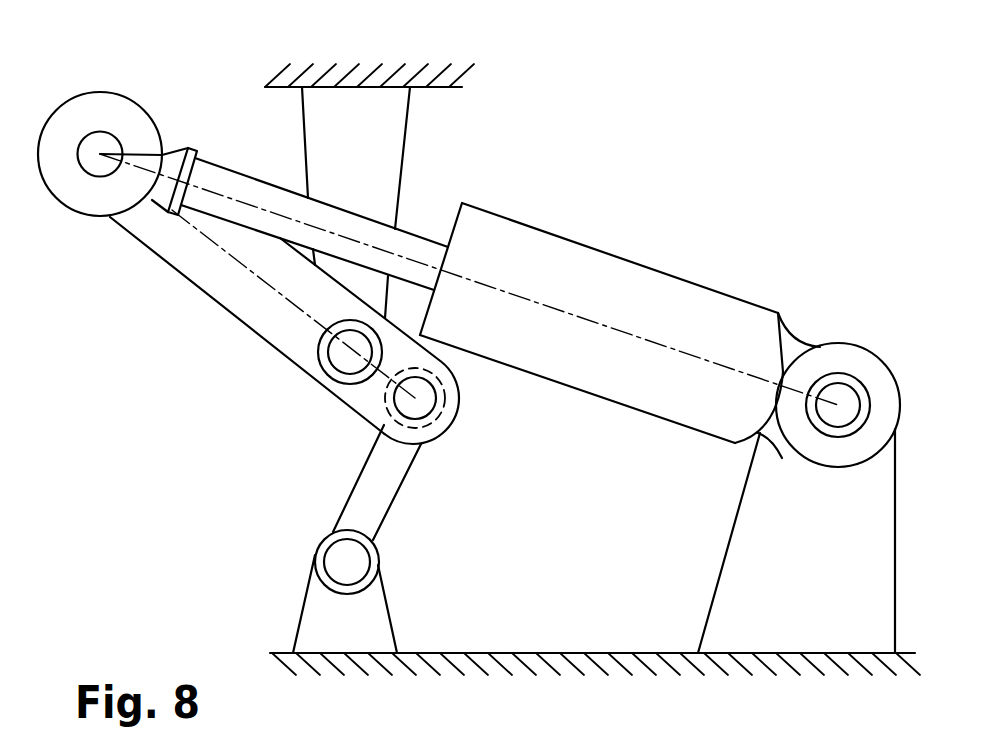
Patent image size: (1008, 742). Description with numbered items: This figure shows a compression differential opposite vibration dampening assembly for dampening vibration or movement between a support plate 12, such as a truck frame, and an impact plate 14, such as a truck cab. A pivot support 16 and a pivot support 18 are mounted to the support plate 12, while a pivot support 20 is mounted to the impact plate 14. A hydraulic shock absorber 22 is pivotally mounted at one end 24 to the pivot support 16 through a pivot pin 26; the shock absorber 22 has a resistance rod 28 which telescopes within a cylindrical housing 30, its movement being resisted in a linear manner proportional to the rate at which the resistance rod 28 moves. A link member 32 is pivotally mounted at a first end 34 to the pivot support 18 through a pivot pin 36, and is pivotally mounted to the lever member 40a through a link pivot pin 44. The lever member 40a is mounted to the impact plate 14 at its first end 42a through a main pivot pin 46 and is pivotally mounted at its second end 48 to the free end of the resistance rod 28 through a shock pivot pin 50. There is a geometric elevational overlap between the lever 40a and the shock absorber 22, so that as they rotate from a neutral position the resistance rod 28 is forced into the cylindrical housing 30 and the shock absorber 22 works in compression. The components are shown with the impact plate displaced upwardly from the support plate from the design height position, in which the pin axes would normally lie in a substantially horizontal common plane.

The support plate 12 is at (600, 650).
The impact plate 14 is at (282, 88).
The pivot support 16 is at (740, 520).
The pivot support 18 is at (397, 628).
The pivot support 20 is at (405, 130).
The hydraulic shock absorber 22 is at (642, 263).
The end of shock absorber 24 is at (800, 335).
The pivot pin 26 is at (838, 405).
The resistance rod 28 is at (400, 237).
The cylindrical housing 30 is at (469, 309).
The link member 32 is at (402, 495).
The first end of link member 34 is at (377, 537).
The pivot pin 36 is at (345, 563).
The lever member 40a is at (250, 328).
The first end of lever member 42a is at (445, 435).
The link pivot pin 44 is at (395, 392).
The main pivot pin 46 is at (350, 350).
The second end of lever member 48 is at (132, 102).
The shock pivot pin 50 is at (102, 155).